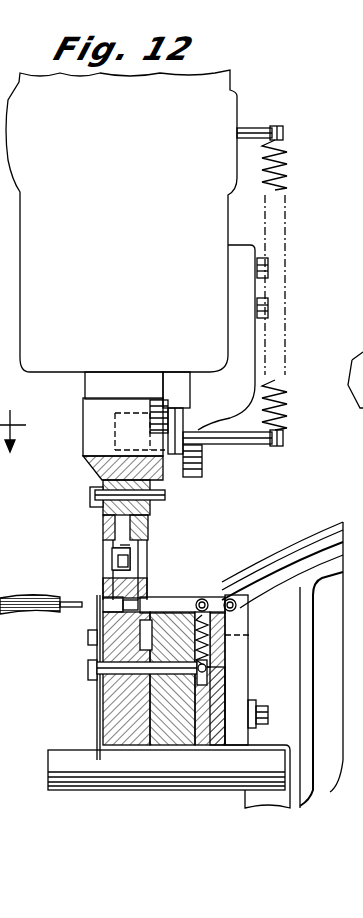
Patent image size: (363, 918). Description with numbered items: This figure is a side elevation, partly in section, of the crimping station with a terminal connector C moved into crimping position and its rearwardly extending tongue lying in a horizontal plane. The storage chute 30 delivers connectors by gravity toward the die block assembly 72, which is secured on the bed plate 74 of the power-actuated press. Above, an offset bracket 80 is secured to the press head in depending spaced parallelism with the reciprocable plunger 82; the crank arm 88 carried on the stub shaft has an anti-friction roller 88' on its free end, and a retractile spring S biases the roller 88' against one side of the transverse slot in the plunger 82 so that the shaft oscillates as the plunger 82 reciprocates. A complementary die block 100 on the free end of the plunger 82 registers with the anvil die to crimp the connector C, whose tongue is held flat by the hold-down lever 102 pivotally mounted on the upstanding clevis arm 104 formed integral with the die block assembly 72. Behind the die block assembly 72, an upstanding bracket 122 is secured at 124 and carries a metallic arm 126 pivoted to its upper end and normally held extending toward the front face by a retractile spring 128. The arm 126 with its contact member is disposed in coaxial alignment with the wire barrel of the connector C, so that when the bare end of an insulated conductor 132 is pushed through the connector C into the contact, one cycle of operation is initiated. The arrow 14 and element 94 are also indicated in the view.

The direction of feed 14 is at (15, 431).
The storage chute 30 is at (298, 565).
The die block assembly 72 is at (98, 713).
The bed plate 74 is at (66, 764).
The offset bracket 80 is at (247, 338).
The reciprocable plunger 82 is at (85, 385).
The crank arm 88 is at (219, 461).
The anti-friction roller 88' is at (188, 417).
The nut 94 is at (355, 377).
The complementary die block 100 is at (104, 517).
The hold-down lever 102 is at (333, 622).
The clevis arm 104 is at (7, 477).
The upstanding bracket 122 is at (240, 650).
The securing point 124 is at (268, 708).
The metallic arm 126 is at (215, 600).
The retractile spring 128 is at (205, 625).
The insulated conductor 132 is at (22, 606).
The terminal connector C is at (108, 600).
The retractile spring S is at (280, 186).